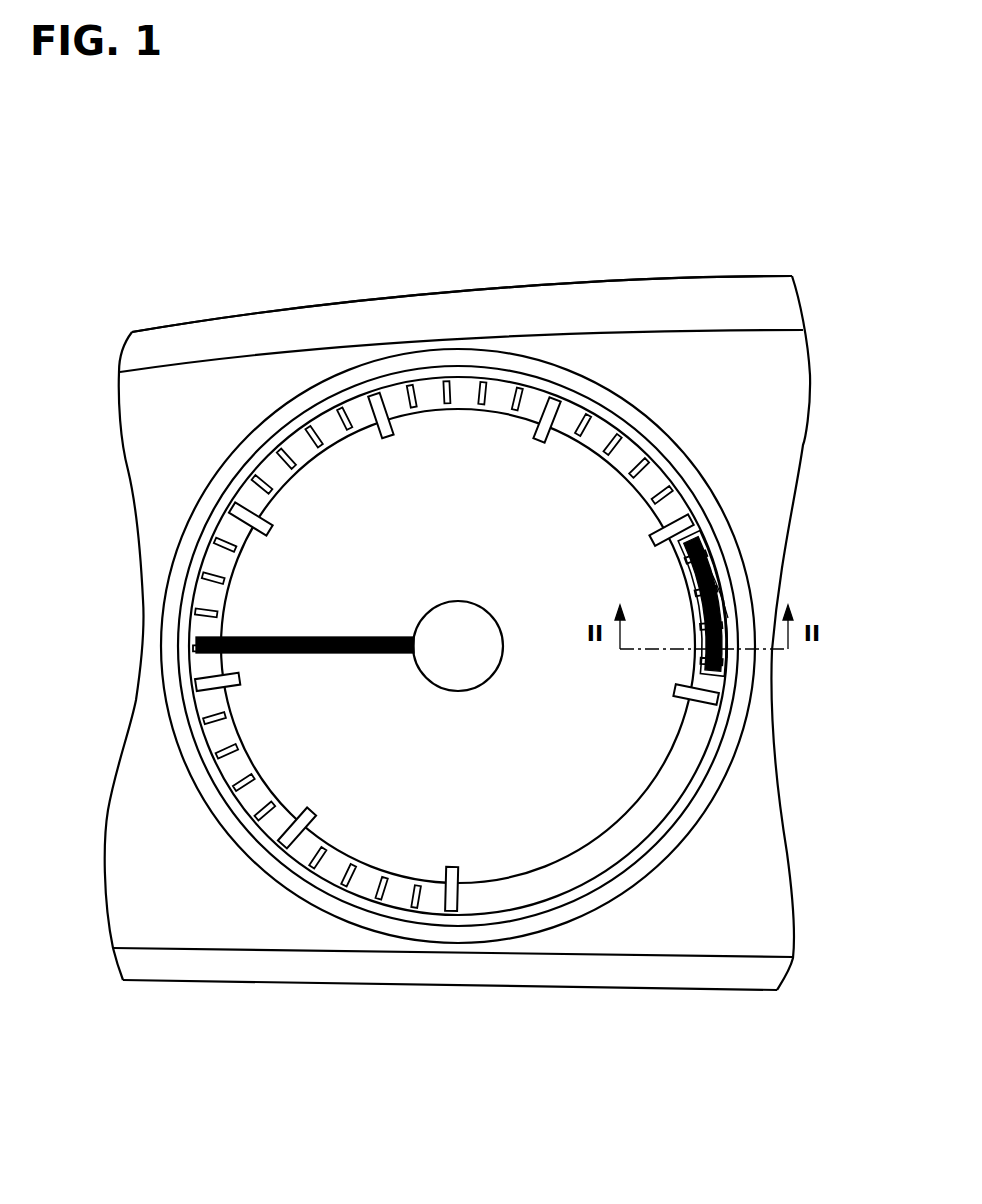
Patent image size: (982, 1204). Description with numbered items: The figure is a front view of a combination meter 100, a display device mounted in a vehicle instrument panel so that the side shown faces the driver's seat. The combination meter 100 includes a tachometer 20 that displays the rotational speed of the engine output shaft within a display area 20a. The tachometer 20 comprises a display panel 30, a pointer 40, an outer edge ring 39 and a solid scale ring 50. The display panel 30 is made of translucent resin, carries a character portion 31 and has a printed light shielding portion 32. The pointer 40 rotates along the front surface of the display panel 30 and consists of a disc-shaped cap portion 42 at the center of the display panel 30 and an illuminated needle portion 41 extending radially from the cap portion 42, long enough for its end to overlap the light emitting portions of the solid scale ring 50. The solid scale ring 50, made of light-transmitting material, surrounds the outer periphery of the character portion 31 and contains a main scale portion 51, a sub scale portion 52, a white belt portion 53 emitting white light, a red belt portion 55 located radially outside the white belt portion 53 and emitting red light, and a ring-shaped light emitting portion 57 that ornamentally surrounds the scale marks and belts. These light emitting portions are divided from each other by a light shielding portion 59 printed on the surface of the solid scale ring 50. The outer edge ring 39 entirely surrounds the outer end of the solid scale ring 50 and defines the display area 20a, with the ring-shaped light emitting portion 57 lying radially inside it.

The combination meter 100 is at (772, 163).
The tachometer 20 is at (685, 416).
The display area 20a is at (722, 512).
The display panel 30 is at (612, 757).
The character portion 31 is at (462, 852).
The light shielding portion 32 is at (520, 848).
The outer edge ring 39 is at (718, 758).
The pointer 40 is at (62, 546).
The needle portion 41 is at (199, 634).
The cap portion 42 is at (414, 630).
The solid scale ring 50 is at (677, 765).
The main scale portion 51 is at (445, 905).
The sub scale portion 52 is at (413, 895).
The white belt portion 53 is at (707, 550).
The red belt portion 55 is at (708, 578).
The ring-shaped light emitting portion 57 is at (728, 607).
The light shielding portion 59 is at (727, 637).